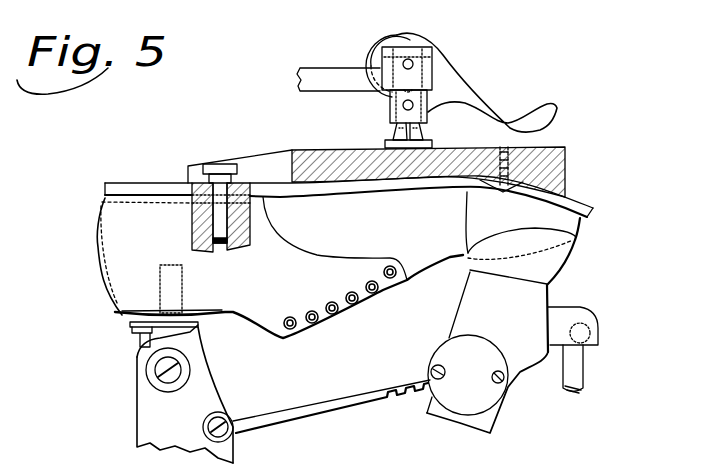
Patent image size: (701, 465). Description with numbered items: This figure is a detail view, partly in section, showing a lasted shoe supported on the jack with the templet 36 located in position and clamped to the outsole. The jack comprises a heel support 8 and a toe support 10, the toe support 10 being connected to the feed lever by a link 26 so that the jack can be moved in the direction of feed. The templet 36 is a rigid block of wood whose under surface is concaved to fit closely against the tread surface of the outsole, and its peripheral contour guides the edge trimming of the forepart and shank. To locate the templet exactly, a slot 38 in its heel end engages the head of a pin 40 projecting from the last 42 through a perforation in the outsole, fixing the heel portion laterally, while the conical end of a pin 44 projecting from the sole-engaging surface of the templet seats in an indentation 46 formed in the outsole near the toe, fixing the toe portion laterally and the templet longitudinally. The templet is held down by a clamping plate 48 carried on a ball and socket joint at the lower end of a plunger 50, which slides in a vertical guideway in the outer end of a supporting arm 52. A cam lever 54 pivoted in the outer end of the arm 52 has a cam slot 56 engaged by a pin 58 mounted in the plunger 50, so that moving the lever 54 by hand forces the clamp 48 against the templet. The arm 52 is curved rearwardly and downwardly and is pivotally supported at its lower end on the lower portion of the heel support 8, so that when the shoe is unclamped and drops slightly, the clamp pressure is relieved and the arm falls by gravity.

The heel support 8 is at (147, 427).
The toe support 10 is at (487, 433).
The link 26 is at (583, 383).
The templet 36 is at (300, 150).
The slot 38 is at (260, 163).
The pin 40 is at (208, 168).
The last 42 is at (200, 222).
The pin 44 is at (512, 165).
The indentation 46 is at (567, 193).
The clamping plate 48 is at (432, 143).
The plunger 50 is at (393, 118).
The supporting arm 52 is at (325, 64).
The cam lever 54 is at (468, 82).
The cam slot 56 is at (395, 36).
The pin 58 is at (400, 101).